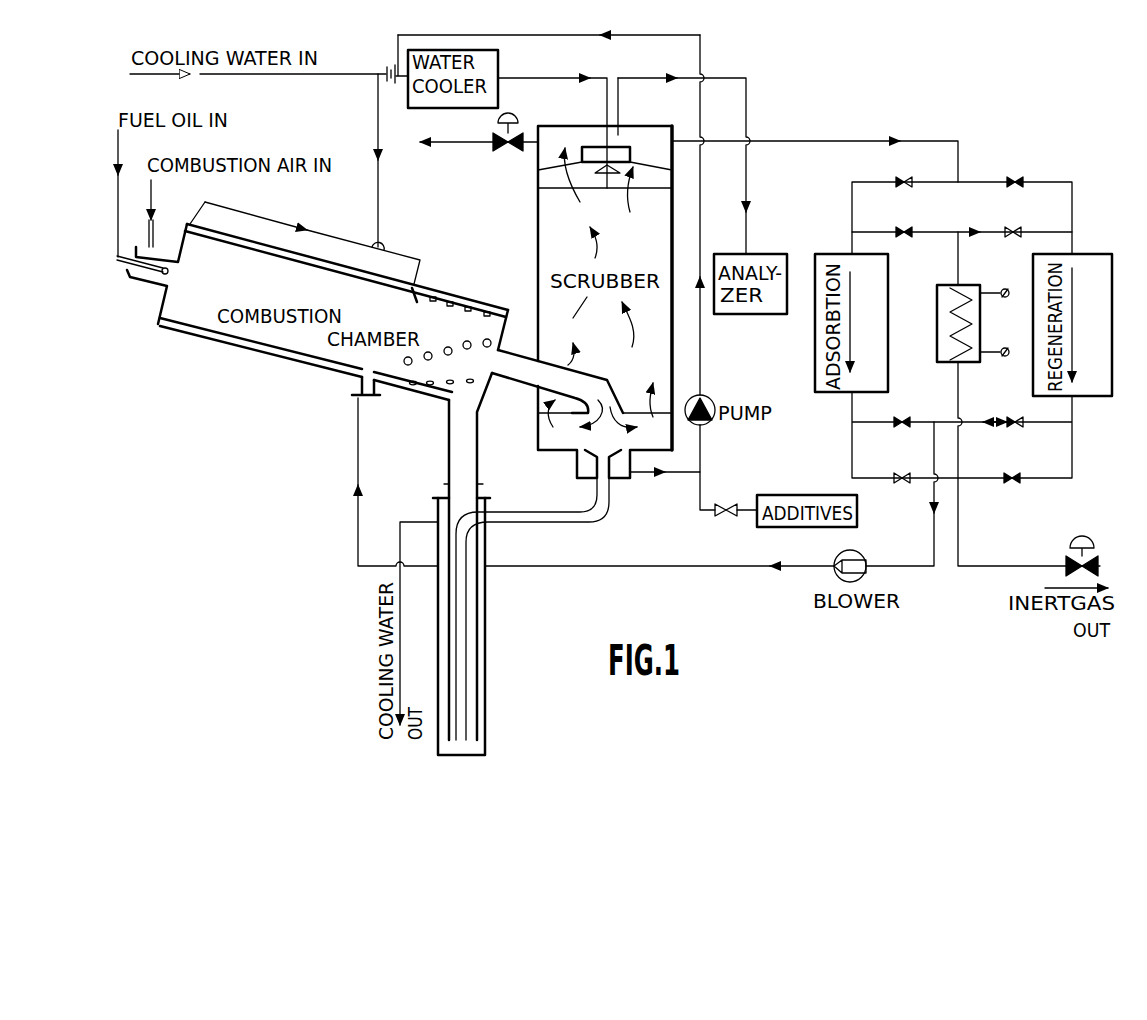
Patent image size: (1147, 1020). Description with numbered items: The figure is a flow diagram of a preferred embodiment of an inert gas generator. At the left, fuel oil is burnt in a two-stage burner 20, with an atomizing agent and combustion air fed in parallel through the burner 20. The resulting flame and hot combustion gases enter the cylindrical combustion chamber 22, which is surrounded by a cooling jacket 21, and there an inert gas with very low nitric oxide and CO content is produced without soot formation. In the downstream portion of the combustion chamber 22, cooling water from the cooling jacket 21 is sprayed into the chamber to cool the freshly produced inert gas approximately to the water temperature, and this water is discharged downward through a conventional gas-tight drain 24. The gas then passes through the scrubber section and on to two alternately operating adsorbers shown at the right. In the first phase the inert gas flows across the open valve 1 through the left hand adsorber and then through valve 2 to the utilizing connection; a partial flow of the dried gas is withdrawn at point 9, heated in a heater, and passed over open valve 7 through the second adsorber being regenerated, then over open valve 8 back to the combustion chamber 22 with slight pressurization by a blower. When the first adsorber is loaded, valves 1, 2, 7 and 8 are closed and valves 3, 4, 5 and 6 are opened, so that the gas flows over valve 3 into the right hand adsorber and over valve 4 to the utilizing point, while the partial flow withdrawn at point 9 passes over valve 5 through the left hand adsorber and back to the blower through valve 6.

The valve 1 is at (900, 179).
The valve 2 is at (902, 480).
The valve 3 is at (1020, 182).
The valve 4 is at (1010, 480).
The valve 5 is at (906, 230).
The valve 6 is at (906, 420).
The valve 7 is at (1020, 232).
The valve 8 is at (1016, 421).
The withdrawal point 9 is at (958, 478).
The burner 20 is at (146, 272).
The cooling jacket 21 is at (483, 302).
The combustion chamber 22 is at (435, 315).
The gas-tight drain 24 is at (480, 629).